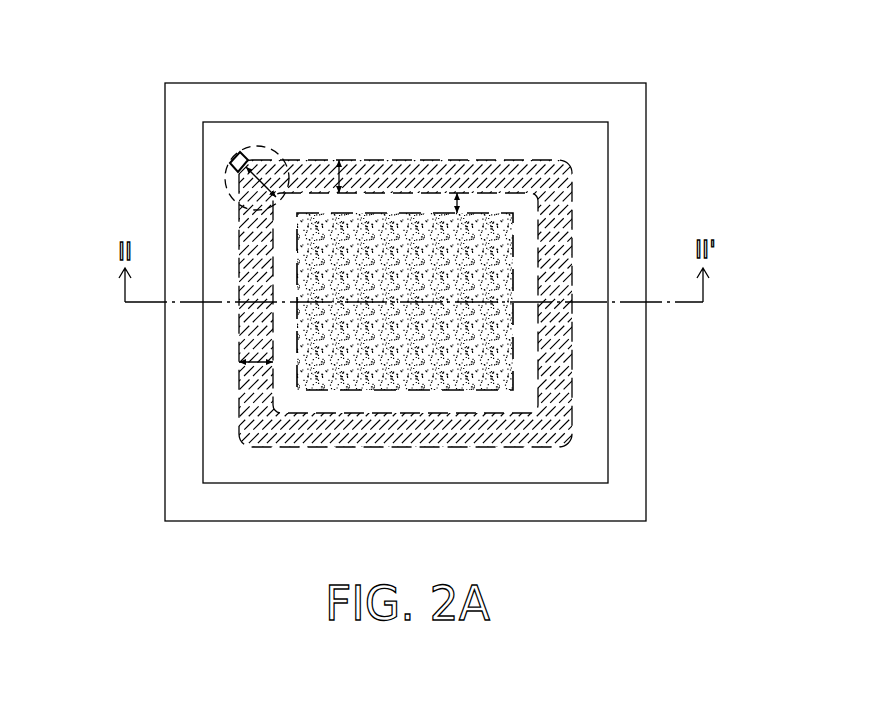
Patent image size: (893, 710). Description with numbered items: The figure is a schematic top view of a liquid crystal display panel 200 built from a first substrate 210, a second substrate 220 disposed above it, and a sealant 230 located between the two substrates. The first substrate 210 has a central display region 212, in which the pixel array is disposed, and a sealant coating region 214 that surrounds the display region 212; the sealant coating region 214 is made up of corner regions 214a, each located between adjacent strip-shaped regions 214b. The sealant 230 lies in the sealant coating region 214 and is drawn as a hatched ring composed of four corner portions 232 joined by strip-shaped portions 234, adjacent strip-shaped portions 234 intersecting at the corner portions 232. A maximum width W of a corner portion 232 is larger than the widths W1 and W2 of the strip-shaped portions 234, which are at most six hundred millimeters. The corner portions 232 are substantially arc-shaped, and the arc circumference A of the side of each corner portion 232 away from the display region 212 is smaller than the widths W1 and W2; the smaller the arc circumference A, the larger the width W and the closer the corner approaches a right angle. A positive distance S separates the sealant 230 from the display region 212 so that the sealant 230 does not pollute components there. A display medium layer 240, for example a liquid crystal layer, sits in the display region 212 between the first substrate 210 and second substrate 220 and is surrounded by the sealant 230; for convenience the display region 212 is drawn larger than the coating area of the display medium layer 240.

The liquid crystal display panel 200 is at (748, 527).
The first substrate 210 is at (646, 467).
The display region 212 is at (513, 343).
The sealant coating region 214 is at (442, 285).
The corner region 214a is at (567, 163).
The strip-shaped region 214b is at (572, 262).
The second substrate 220 is at (608, 422).
The sealant 230 is at (132, 191).
The corner portion 232 is at (231, 182).
The strip-shaped portion 234 is at (442, 289).
The display medium layer 240 is at (413, 226).
The arc circumference A is at (233, 153).
The maximum width of corner portion W is at (265, 148).
The width of strip-shaped portion W1 is at (339, 160).
The width of strip-shaped portion W2 is at (240, 360).
The distance S is at (467, 207).